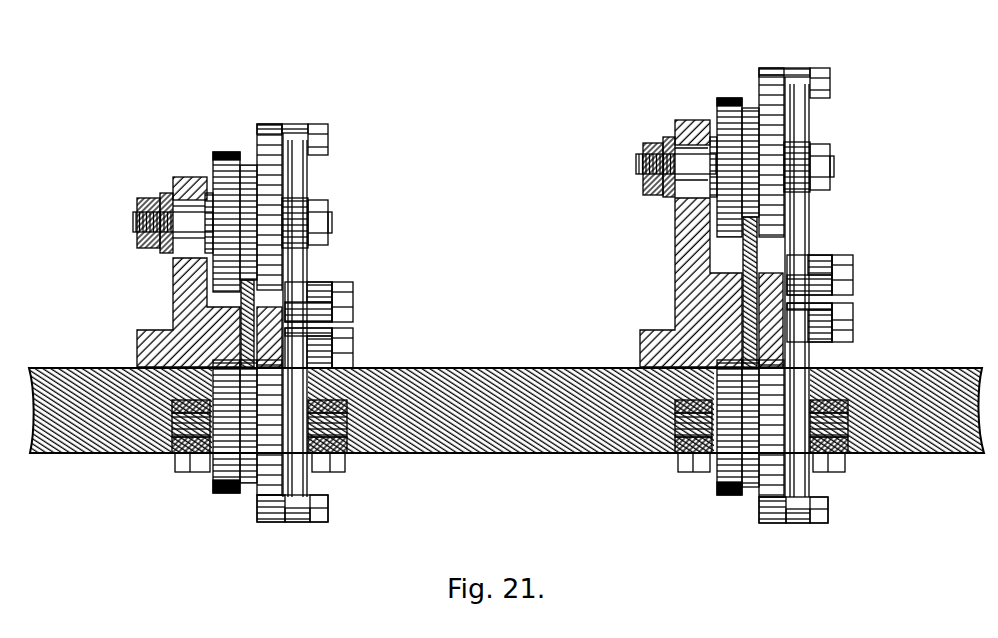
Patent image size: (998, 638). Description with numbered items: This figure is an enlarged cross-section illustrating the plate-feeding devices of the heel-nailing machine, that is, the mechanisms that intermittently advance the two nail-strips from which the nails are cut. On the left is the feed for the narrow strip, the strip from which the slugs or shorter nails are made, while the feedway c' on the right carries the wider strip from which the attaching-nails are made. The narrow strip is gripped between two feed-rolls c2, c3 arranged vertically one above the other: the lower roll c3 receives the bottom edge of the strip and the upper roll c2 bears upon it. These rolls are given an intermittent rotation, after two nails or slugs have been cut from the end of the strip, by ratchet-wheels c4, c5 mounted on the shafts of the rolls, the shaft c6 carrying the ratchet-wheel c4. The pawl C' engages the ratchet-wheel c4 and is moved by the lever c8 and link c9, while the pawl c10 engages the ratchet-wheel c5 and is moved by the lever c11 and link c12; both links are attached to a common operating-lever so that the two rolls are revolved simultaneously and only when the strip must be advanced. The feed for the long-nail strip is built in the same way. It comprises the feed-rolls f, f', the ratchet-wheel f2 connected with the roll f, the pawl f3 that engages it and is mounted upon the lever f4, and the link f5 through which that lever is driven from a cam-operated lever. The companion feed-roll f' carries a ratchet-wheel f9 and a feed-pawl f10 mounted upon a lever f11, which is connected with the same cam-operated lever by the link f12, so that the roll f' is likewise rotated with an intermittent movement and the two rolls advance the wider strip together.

The pawl C' is at (253, 192).
The feedway c' is at (209, 272).
The feed-roll c2 is at (249, 163).
The feed-roll c3 is at (248, 484).
The ratchet-wheel c4 is at (272, 198).
The ratchet-wheel c5 is at (273, 482).
The shaft c6 is at (160, 223).
The lever c8 is at (298, 178).
The link c9 is at (330, 297).
The pawl c10 is at (275, 522).
The lever c11 is at (298, 463).
The link c12 is at (330, 342).
The feed-roll f is at (748, 139).
The feed-roll f' is at (711, 327).
The ratchet-wheel f2 is at (772, 138).
The pawl f3 is at (773, 68).
The lever f4 is at (798, 122).
The link f5 is at (837, 255).
The ratchet-wheel f9 is at (770, 383).
The feed-pawl f10 is at (774, 516).
The lever f11 is at (800, 483).
The link f12 is at (823, 320).